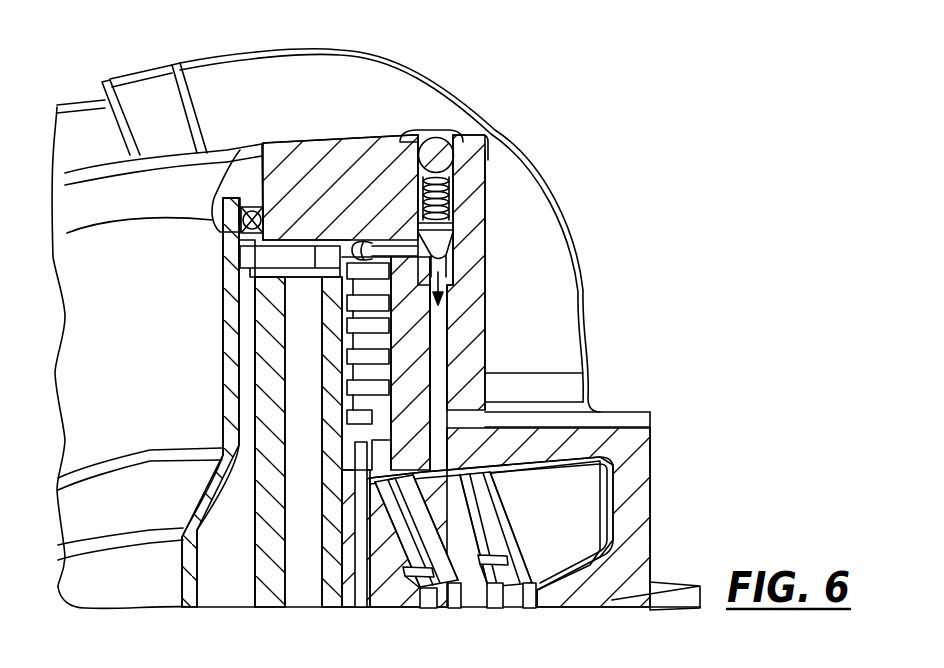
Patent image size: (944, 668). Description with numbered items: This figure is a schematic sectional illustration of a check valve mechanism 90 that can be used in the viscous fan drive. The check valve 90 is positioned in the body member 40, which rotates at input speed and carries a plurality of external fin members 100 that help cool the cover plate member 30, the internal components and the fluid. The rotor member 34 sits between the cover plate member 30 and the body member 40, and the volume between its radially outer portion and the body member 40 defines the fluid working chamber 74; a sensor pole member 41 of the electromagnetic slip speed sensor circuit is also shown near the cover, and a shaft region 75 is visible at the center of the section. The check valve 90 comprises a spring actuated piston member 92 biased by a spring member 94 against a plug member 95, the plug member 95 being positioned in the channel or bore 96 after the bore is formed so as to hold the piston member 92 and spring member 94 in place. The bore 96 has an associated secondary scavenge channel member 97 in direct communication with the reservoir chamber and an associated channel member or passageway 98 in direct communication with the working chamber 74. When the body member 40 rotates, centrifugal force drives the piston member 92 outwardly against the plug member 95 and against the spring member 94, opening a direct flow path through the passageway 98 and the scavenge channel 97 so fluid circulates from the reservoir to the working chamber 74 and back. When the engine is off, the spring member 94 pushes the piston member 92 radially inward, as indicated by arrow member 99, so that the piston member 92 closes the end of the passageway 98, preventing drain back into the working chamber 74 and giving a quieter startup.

The cover plate member 30 is at (233, 362).
The rotor member 34 is at (262, 333).
The body member 40 is at (648, 450).
The sensor pole member 41 is at (228, 185).
The fluid working chamber 74 is at (343, 360).
The shaft 75 is at (295, 570).
The check valve 90 is at (496, 112).
The piston member 92 is at (455, 242).
The spring member 94 is at (450, 195).
The plug member 95 is at (432, 156).
The channel or bore 96 is at (452, 160).
The secondary scavenge channel member 97 is at (443, 373).
The channel member or passageway 98 is at (368, 248).
The arrow member 99 is at (442, 297).
The external fin members 100 is at (205, 72).